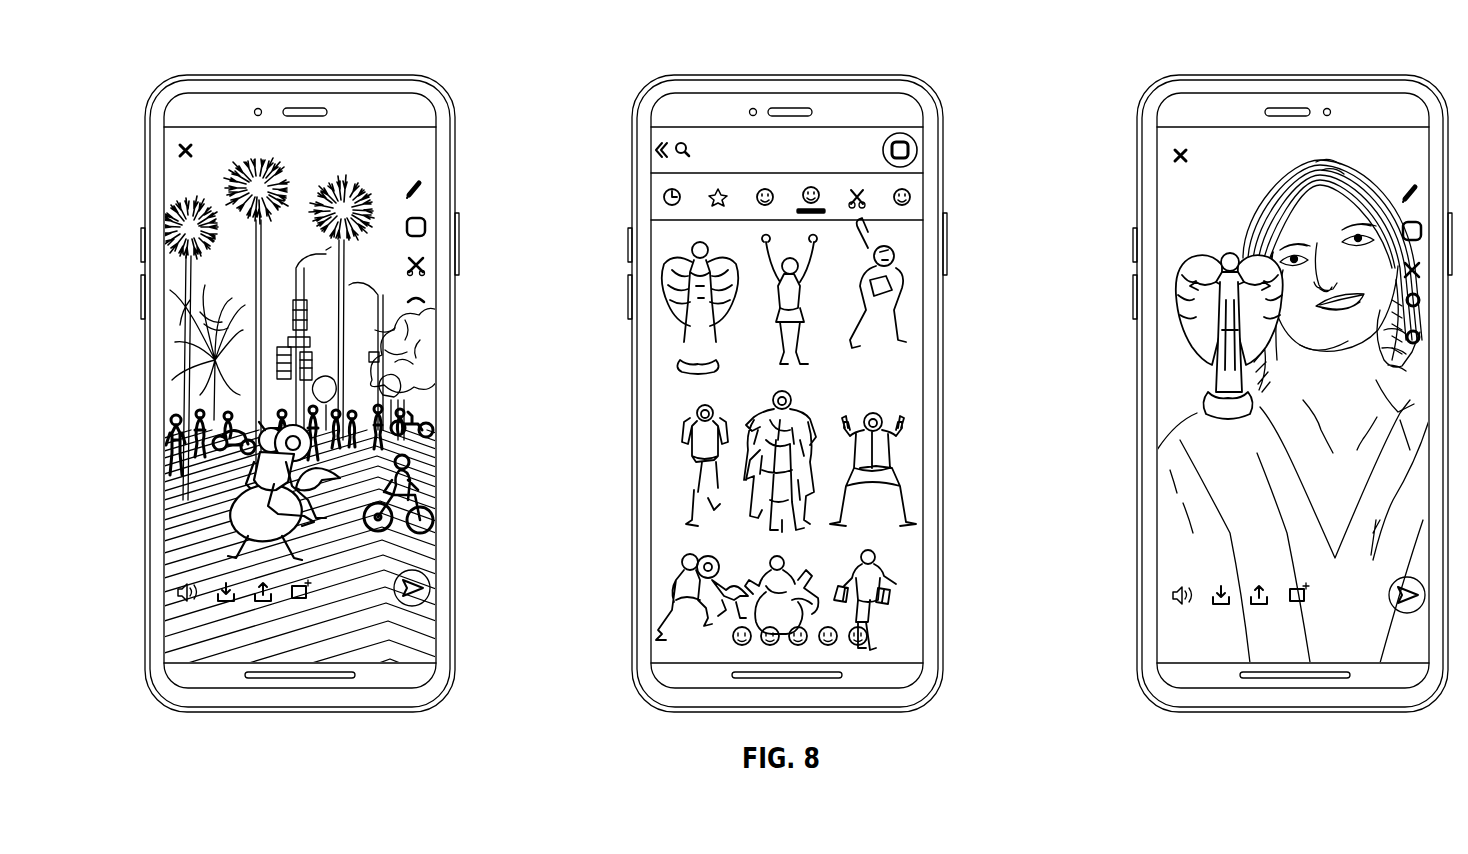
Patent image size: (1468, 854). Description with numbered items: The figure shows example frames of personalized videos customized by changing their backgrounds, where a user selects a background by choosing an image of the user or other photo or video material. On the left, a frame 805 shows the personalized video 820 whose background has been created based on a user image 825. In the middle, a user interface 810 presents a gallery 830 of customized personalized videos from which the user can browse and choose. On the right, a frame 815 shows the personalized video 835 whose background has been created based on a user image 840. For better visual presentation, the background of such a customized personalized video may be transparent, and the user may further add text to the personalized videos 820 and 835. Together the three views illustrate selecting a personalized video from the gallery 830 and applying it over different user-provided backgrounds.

The frame 805 is at (222, 100).
The user interface 810 is at (858, 133).
The frame 815 is at (1245, 138).
The personalized video 820 is at (257, 497).
The user image 825 is at (428, 178).
The gallery 830 is at (883, 577).
The personalized video 835 is at (1177, 283).
The user image 840 is at (1327, 203).